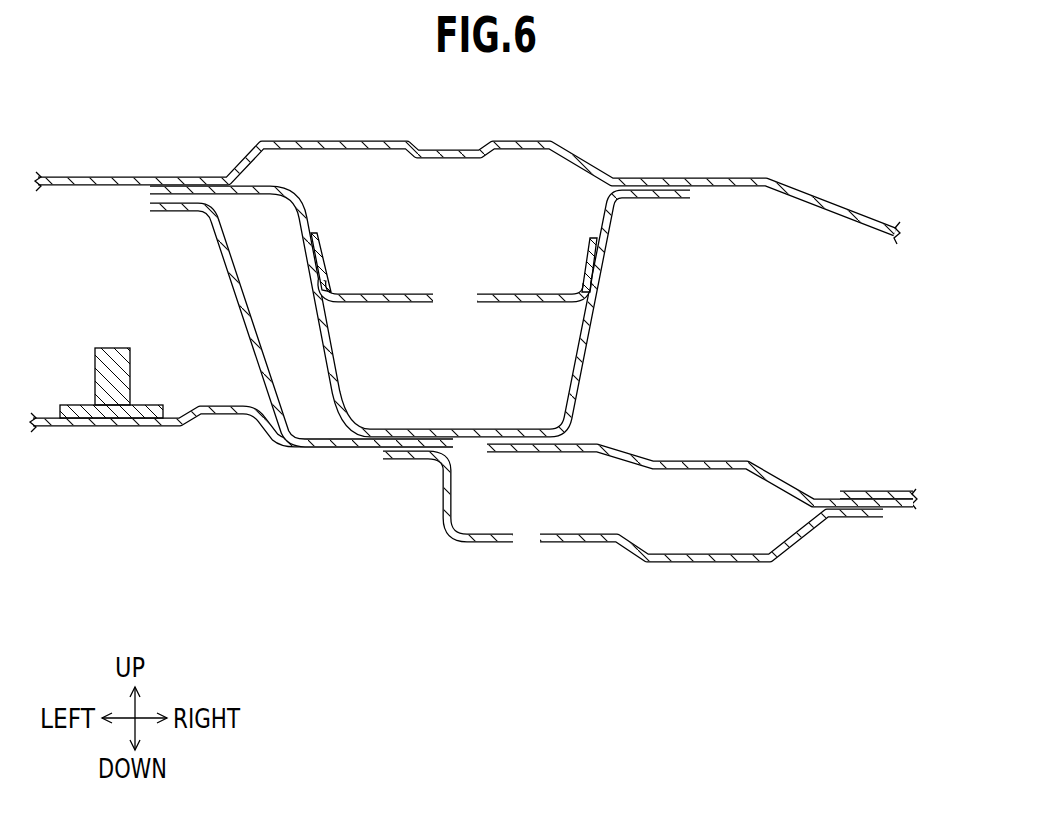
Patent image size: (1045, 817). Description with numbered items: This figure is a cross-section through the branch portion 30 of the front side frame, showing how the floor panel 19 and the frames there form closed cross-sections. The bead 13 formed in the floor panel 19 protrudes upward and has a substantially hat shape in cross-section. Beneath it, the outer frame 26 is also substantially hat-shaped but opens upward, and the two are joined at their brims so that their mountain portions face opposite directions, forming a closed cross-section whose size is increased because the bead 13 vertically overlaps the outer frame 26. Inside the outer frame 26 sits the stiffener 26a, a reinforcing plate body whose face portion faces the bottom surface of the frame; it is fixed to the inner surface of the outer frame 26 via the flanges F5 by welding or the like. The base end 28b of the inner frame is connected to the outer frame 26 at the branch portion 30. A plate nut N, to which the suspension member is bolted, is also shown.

The bead 13 is at (548, 138).
The floor panel 19 is at (753, 178).
The outer frame 26 is at (592, 340).
The stiffener 26a is at (399, 294).
The base end of the inner frame 28b is at (210, 268).
The branch portion 30 is at (622, 270).
The flanges F5 is at (314, 246).
The plate nut N is at (115, 392).